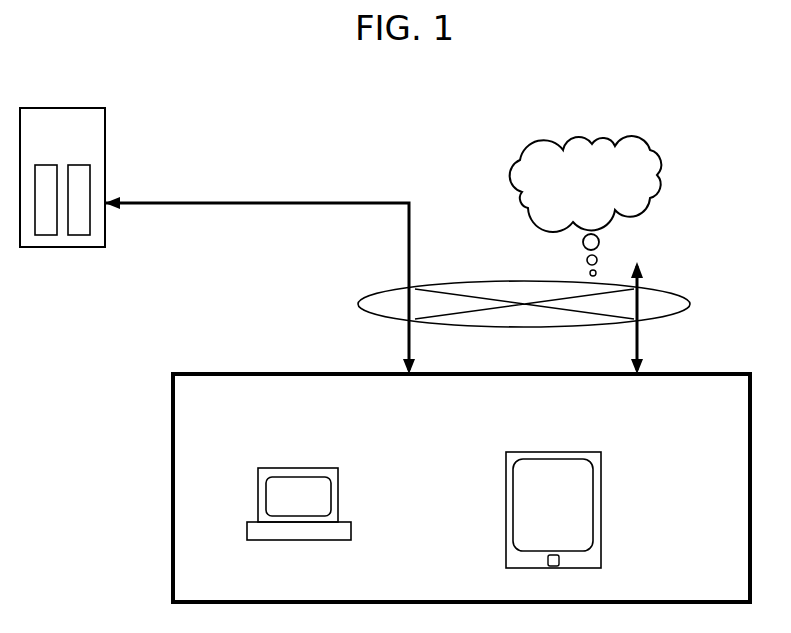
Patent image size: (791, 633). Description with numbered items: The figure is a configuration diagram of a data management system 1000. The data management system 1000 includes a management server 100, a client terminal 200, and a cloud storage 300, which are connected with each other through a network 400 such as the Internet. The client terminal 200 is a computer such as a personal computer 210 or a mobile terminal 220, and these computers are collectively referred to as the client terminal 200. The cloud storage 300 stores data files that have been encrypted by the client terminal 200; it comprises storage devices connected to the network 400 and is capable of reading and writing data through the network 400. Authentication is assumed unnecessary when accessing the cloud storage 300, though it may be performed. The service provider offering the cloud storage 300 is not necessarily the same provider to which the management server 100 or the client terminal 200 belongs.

The data management system 1000 is at (84, 342).
The management server 100 is at (106, 178).
The client terminal 200 is at (172, 490).
The personal computer 210 is at (339, 497).
The mobile terminal 220 is at (602, 510).
The cloud storage 300 is at (667, 182).
The network 400 is at (692, 303).